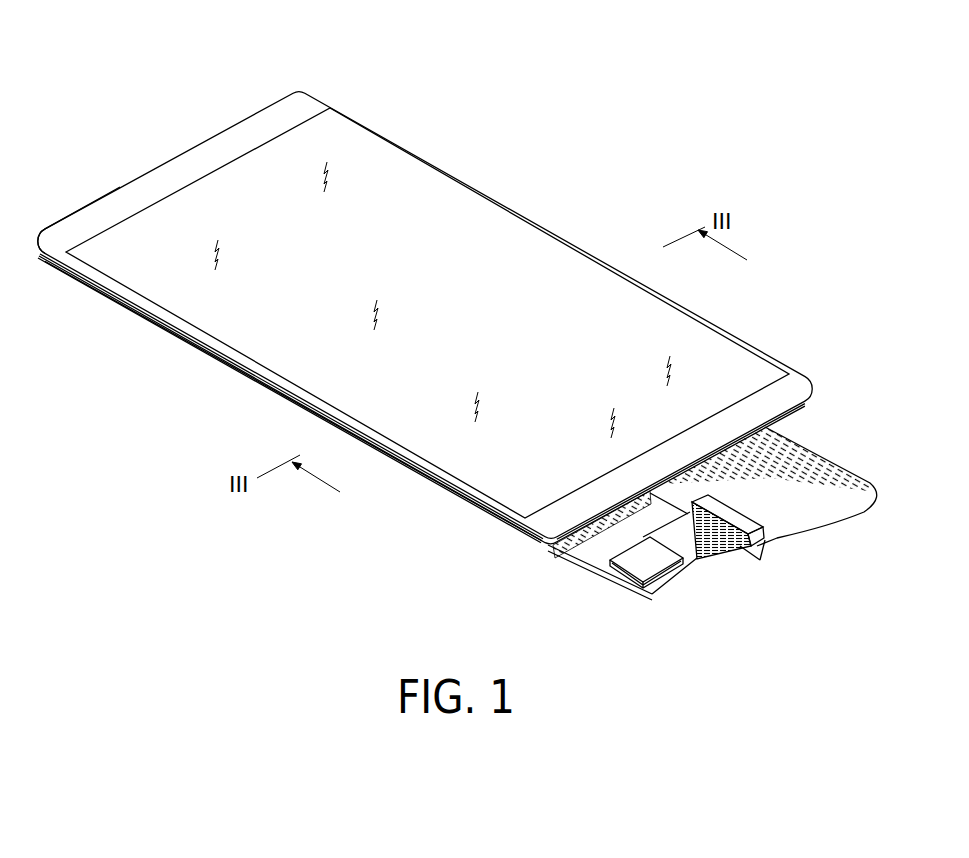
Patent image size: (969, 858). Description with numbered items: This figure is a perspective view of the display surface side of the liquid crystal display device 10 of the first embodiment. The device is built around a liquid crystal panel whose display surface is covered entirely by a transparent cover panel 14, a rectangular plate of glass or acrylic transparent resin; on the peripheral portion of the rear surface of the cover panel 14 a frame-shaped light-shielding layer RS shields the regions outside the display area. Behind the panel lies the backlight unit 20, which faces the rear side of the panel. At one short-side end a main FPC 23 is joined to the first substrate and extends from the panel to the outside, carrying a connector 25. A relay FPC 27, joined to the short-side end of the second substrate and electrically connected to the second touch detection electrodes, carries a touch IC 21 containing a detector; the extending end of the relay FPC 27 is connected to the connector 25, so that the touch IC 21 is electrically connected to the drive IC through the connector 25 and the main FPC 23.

The liquid crystal display device 10 is at (414, 96).
The cover panel 14 is at (427, 200).
The backlight unit 20 is at (432, 499).
The touch IC 21 is at (654, 566).
The main FPC 23 is at (798, 490).
The connector 25 is at (738, 508).
The relay FPC 27 is at (598, 545).
The light-shielding layer RS is at (84, 222).